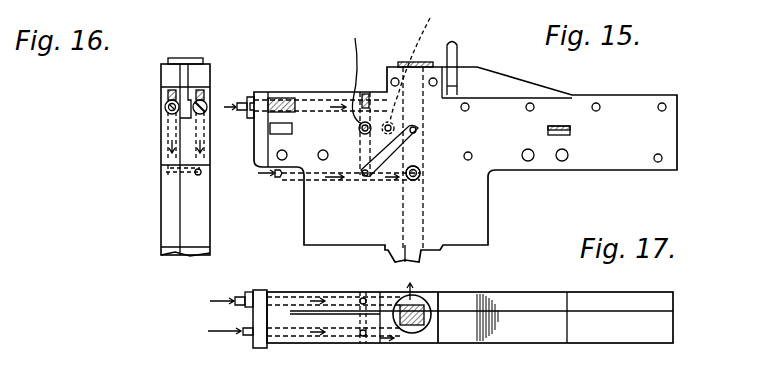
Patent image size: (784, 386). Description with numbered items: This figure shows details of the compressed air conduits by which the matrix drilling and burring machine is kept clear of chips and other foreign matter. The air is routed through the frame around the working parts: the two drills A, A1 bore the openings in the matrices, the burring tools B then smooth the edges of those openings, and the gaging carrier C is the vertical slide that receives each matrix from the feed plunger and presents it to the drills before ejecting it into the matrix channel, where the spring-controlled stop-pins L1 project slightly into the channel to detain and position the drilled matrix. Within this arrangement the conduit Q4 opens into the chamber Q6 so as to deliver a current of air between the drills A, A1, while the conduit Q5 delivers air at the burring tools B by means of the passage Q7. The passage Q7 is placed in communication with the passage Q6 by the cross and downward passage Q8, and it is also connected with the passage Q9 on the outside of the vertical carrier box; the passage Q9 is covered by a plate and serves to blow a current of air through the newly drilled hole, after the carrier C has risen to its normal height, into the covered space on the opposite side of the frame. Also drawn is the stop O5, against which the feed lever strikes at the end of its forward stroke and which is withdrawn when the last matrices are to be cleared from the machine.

In FIG. 15, the conduit Q4 is at (277, 175).
In FIG. 17, the conduit Q4 is at (246, 337).
In FIG. 15, the conduit Q5 is at (240, 100).
In FIG. 17, the conduit Q5 is at (240, 296).
In FIG. 16, the chamber Q6 is at (195, 175).
In FIG. 15, the chamber Q6 is at (306, 182).
In FIG. 16, the passage Q7 is at (164, 107).
In FIG. 15, the passage Q7 is at (313, 100).
In FIG. 17, the passage Q7 is at (286, 298).
In FIG. 16, the cross and downward passage Q8 is at (175, 152).
In FIG. 15, the cross and downward passage Q8 is at (376, 120).
In FIG. 17, the cross and downward passage Q8 is at (356, 332).
In FIG. 15, the passage Q9 is at (374, 184).
In FIG. 17, the passage Q9 is at (412, 334).
In FIG. 15, the burring tools B is at (342, 36).
In FIG. 15, the stop-pins L1 is at (415, 64).
In FIG. 15, the stop O5 is at (456, 90).
In FIG. 15, the drill A is at (472, 191).
In FIG. 15, the drill A1 is at (420, 177).
In FIG. 15, the gaging carrier C is at (405, 255).
In FIG. 17, the gaging carrier C is at (425, 300).